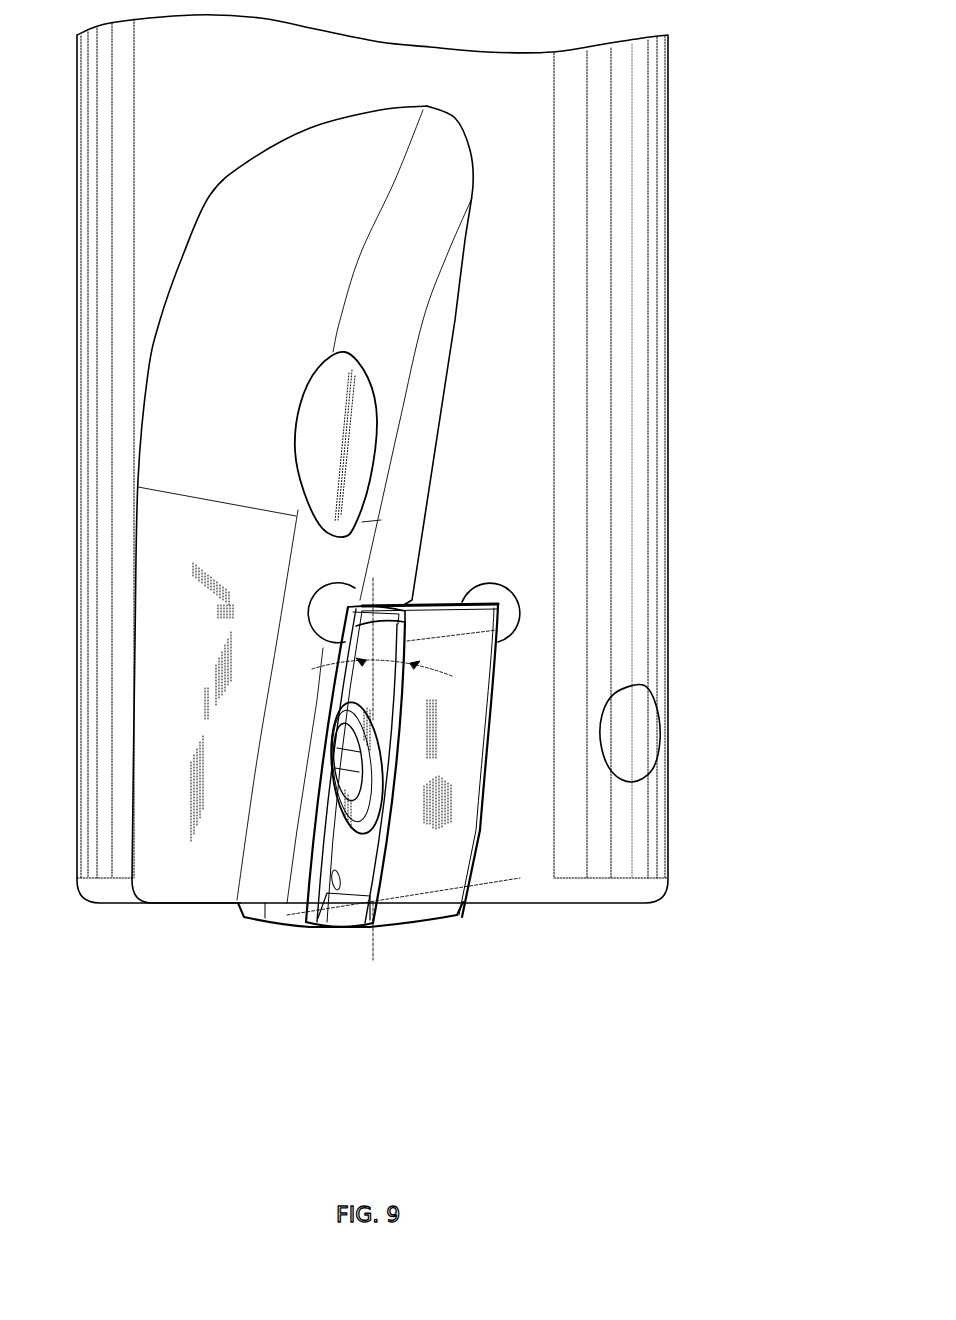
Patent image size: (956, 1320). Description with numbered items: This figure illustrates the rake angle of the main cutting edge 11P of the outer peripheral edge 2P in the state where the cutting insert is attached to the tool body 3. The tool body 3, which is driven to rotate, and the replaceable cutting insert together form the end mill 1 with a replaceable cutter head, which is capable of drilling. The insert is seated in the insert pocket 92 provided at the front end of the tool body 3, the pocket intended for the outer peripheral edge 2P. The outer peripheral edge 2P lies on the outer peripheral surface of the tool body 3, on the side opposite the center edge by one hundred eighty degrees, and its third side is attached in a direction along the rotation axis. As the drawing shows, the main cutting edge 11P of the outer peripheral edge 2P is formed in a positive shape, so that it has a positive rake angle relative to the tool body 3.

The end mill 1 is at (434, 590).
The tool body 3 is at (670, 592).
The insert pocket 92 is at (483, 752).
The outer peripheral edge 2P is at (425, 835).
The main cutting edge 11P is at (368, 831).